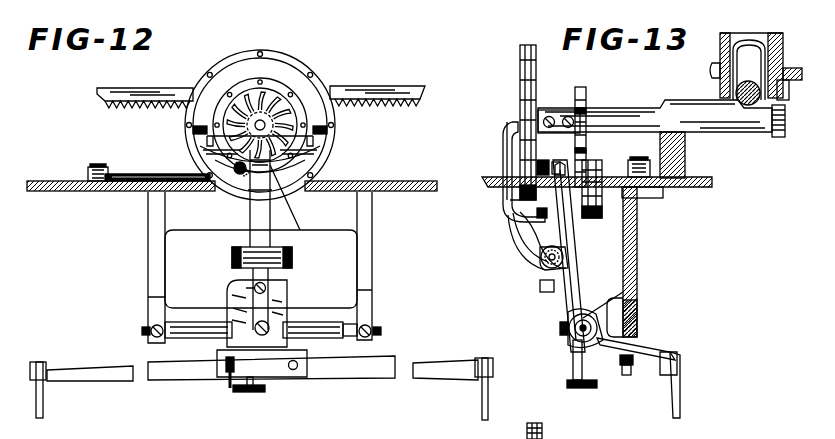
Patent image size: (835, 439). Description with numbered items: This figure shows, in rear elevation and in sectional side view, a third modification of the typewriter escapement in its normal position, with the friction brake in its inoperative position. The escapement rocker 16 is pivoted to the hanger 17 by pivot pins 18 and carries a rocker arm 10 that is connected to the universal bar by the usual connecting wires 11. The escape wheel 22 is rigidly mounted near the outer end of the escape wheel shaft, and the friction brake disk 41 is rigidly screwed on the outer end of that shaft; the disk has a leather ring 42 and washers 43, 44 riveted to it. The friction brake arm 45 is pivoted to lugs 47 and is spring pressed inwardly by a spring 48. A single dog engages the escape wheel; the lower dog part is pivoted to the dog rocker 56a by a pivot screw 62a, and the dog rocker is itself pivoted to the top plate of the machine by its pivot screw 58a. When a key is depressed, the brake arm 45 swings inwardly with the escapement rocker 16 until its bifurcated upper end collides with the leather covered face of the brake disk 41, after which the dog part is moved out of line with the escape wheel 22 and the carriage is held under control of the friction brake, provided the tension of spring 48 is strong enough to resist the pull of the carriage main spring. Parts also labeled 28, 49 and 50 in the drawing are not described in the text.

In FIG. 12, the rocker arm 10 is at (347, 368).
In FIG. 12, the connecting wires 11 is at (43, 410).
In FIG. 13, the connecting wires 11 is at (680, 390).
In FIG. 13, the escapement rocker 16 is at (570, 305).
In FIG. 12, the hanger 17 is at (372, 222).
In FIG. 13, the hanger 17 is at (638, 318).
In FIG. 12, the pivot pins 18 is at (142, 331).
In FIG. 13, the escape wheel 22 is at (584, 88).
In FIG. 13, the link 28 is at (563, 165).
In FIG. 12, the friction brake disk 41 is at (222, 68).
In FIG. 13, the friction brake disk 41 is at (529, 46).
In FIG. 12, the leather ring 42 is at (242, 66).
In FIG. 12, the washer 43 is at (298, 68).
In FIG. 12, the washer 44 is at (300, 110).
In FIG. 13, the friction brake arm 45 is at (504, 198).
In FIG. 12, the lugs 47 is at (232, 264).
In FIG. 13, the lugs 47 is at (569, 259).
In FIG. 12, the spring 48 is at (240, 282).
In FIG. 13, the spring 48 is at (516, 240).
In FIG. 12, the pivot pin 49 is at (268, 345).
In FIG. 13, the pivot pin 49 is at (569, 333).
In FIG. 12, the screw 50 is at (267, 290).
In FIG. 12, the dog rocker 56a is at (165, 174).
In FIG. 12, the pivot screw 58a is at (98, 166).
In FIG. 13, the pivot screw 58a is at (634, 160).
In FIG. 13, the pivot screw 62a is at (603, 200).